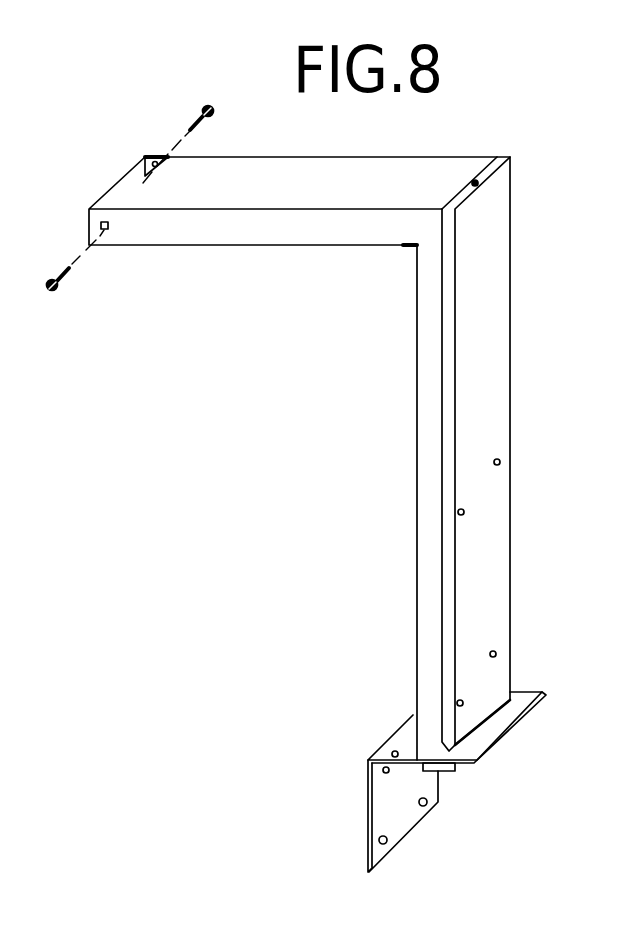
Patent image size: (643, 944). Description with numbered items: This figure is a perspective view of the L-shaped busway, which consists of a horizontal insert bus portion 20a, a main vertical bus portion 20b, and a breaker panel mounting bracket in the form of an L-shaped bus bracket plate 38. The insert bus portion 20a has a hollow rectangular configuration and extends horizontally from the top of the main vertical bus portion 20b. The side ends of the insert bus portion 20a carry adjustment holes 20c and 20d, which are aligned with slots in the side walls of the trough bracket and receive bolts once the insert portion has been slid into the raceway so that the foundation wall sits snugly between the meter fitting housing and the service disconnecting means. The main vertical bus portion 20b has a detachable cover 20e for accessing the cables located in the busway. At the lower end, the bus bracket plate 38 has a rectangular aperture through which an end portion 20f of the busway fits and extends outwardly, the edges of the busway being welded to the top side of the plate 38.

The horizontal insert bus portion 20a is at (183, 190).
The main vertical bus portion 20b is at (425, 388).
The adjustment hole 20c is at (105, 222).
The adjustment hole 20d is at (147, 156).
The detachable cover 20e is at (482, 406).
The end portion of the busway 20f is at (455, 768).
The L-shaped bus bracket plate 38 is at (520, 707).